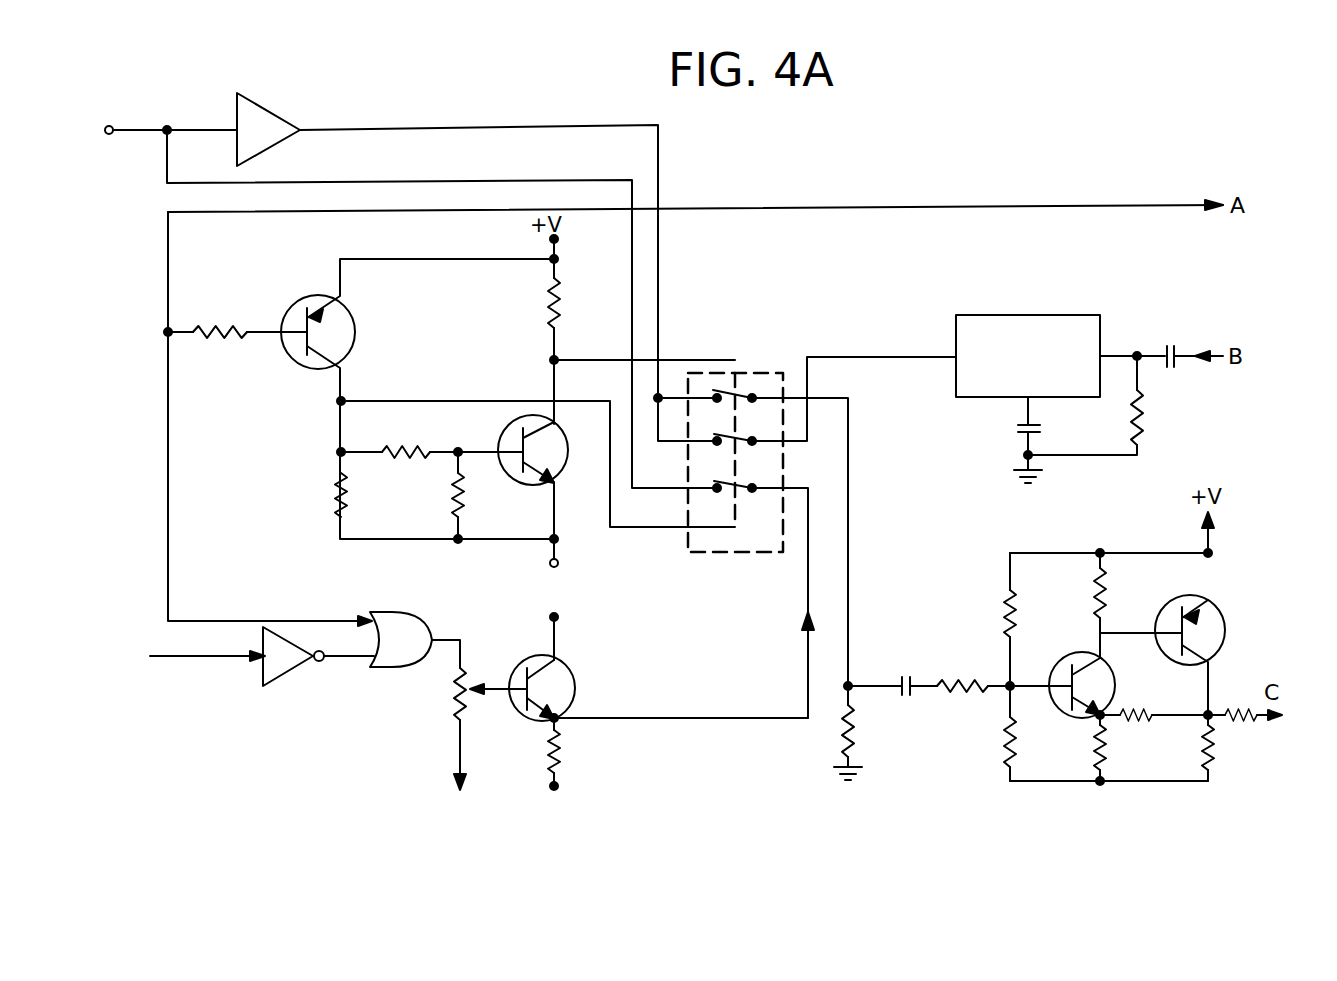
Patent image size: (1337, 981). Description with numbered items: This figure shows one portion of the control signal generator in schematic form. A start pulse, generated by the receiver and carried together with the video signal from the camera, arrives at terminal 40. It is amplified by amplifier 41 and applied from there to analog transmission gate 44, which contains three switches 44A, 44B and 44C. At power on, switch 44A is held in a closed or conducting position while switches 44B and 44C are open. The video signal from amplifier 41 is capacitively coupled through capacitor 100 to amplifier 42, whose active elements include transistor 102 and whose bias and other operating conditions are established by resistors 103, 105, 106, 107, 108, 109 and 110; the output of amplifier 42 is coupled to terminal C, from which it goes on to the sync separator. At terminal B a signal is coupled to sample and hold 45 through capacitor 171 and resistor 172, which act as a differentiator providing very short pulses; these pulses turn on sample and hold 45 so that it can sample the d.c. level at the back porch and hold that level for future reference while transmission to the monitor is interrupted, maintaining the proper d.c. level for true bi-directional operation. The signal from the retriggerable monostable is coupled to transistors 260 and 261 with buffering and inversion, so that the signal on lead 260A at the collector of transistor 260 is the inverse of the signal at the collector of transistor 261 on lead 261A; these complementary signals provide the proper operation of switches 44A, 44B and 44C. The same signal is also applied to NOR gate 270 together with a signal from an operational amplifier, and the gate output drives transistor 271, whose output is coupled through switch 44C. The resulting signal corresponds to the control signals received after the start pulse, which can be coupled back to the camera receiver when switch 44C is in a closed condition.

The terminal 40 is at (107, 136).
The amplifier 41 is at (278, 86).
The amplifier 42 is at (1100, 538).
The analog transmission gate 44 is at (822, 526).
The switch 44A is at (737, 395).
The switch 44B is at (728, 437).
The switch 44C is at (728, 484).
The sample and hold 45 is at (1012, 315).
The capacitor 100 is at (904, 676).
The transistor 102 is at (1222, 612).
The resistor 103 is at (950, 696).
The resistor 105 is at (1004, 616).
The resistor 106 is at (1094, 750).
The resistor 107 is at (1200, 746).
The resistor 108 is at (1138, 686).
The resistor 109 is at (1105, 592).
The resistor 110 is at (1232, 720).
The capacitor 171 is at (1170, 345).
The resistor 172 is at (1143, 413).
The transistor 260 is at (352, 320).
The lead 260A is at (415, 400).
The transistor 261 is at (522, 483).
The lead 261A is at (578, 360).
The NOR gate 270 is at (388, 612).
The transistor 271 is at (572, 680).